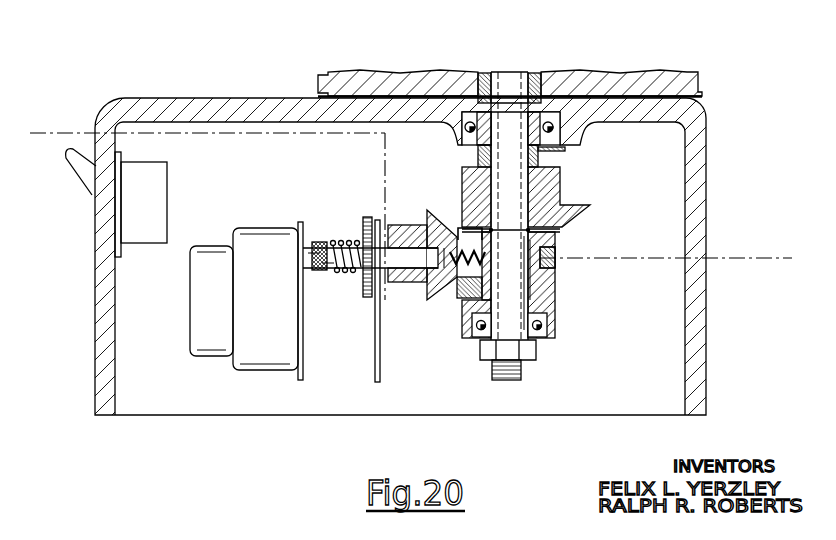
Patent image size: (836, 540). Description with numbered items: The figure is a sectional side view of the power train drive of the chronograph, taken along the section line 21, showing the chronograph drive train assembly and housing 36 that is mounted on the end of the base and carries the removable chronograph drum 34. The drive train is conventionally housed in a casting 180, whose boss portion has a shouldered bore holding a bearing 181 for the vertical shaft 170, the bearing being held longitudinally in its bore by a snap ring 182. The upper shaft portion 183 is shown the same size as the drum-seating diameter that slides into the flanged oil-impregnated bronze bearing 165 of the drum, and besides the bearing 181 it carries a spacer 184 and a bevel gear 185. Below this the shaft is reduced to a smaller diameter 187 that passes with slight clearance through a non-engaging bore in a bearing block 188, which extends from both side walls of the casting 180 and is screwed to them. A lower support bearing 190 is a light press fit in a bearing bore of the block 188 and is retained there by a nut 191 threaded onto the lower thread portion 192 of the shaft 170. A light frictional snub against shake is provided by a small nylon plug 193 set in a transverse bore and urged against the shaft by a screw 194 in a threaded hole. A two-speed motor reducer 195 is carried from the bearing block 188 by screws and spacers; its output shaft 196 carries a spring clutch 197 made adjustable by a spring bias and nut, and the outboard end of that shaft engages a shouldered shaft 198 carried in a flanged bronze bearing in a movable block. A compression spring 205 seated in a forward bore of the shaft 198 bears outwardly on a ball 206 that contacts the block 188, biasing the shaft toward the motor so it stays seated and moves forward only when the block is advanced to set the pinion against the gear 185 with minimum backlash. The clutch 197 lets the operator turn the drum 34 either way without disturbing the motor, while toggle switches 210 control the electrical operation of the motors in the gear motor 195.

The section line 21— 21 is at (43, 133).
The chronograph drum 34 is at (617, 66).
The chronograph drive train assembly and housing 36 is at (183, 81).
The flanged bearing 165 is at (485, 75).
The shaft 170 is at (505, 75).
The casting 180 is at (438, 119).
The bearing 181 is at (550, 118).
The snap ring 182 is at (565, 147).
The shaft portion 183 is at (540, 157).
The spacer 184 is at (478, 161).
The bevel gear 185 is at (579, 212).
The reduced shaft diameter 187 is at (522, 296).
The bearing block 188 is at (555, 316).
The lower support bearing 190 is at (542, 337).
The nut 191 is at (524, 361).
The lower thread portion 192 is at (492, 372).
The plastic plug 193 is at (532, 268).
The screw 194 is at (556, 257).
The two-speed motor reducer 195 is at (267, 225).
The output shaft 196 is at (348, 248).
The spring clutch 197 is at (352, 286).
The shouldered shaft 198 is at (422, 251).
The compression spring 205 is at (478, 262).
The ball 206 is at (487, 232).
The toggle switches 210 is at (162, 186).